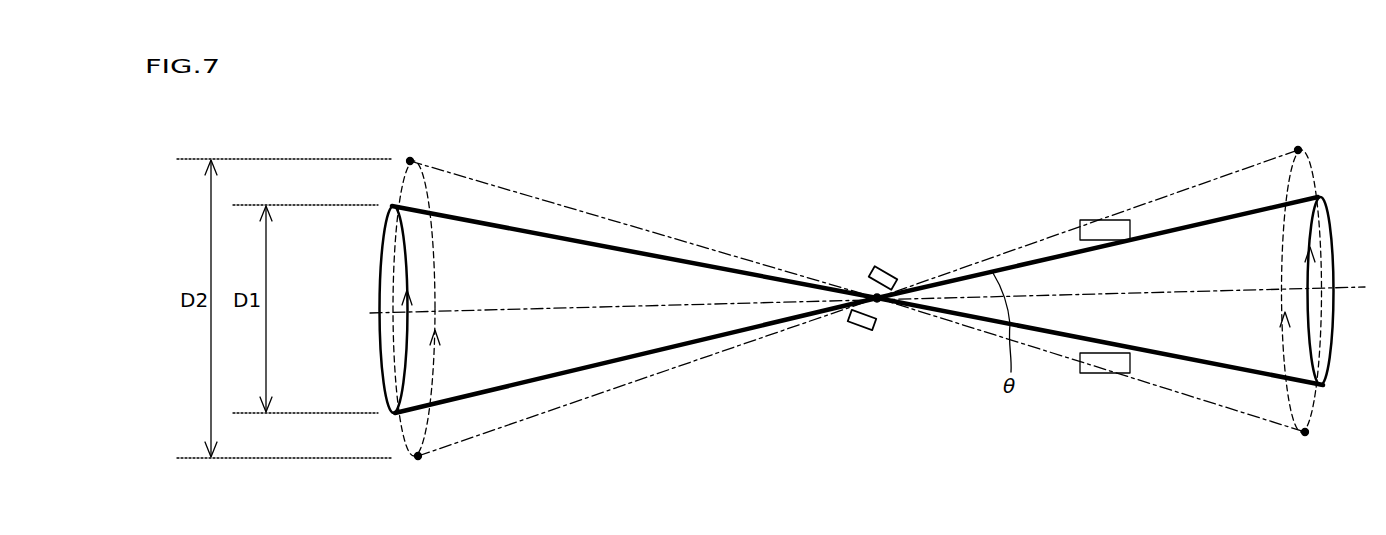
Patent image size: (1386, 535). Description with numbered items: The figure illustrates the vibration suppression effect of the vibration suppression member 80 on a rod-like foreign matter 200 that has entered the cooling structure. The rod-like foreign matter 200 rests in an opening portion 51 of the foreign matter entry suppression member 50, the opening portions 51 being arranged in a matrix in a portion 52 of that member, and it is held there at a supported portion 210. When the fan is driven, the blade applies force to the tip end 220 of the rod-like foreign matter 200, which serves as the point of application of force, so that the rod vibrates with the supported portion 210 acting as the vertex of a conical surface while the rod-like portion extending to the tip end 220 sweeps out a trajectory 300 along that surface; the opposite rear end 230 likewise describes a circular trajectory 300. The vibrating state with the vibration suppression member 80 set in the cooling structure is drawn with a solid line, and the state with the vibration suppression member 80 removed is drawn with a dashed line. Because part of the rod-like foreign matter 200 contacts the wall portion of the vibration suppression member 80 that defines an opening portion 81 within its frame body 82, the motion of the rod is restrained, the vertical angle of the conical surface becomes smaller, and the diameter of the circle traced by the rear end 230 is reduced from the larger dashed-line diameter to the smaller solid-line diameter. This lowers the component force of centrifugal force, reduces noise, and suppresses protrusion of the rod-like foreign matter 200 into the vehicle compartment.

The rod-like foreign matter 200 is at (518, 228).
The rear end 230 is at (410, 161).
The tip end 220 is at (1298, 150).
The trajectory 300 is at (378, 340).
The foreign matter entry suppression member 50 is at (874, 238).
The opening portion 51 is at (860, 272).
The portion 52 is at (888, 274).
The supported portion 210 is at (884, 303).
The vibration suppression member 80 is at (1078, 186).
The opening portion 81 is at (1122, 264).
The frame body 82 is at (1105, 229).